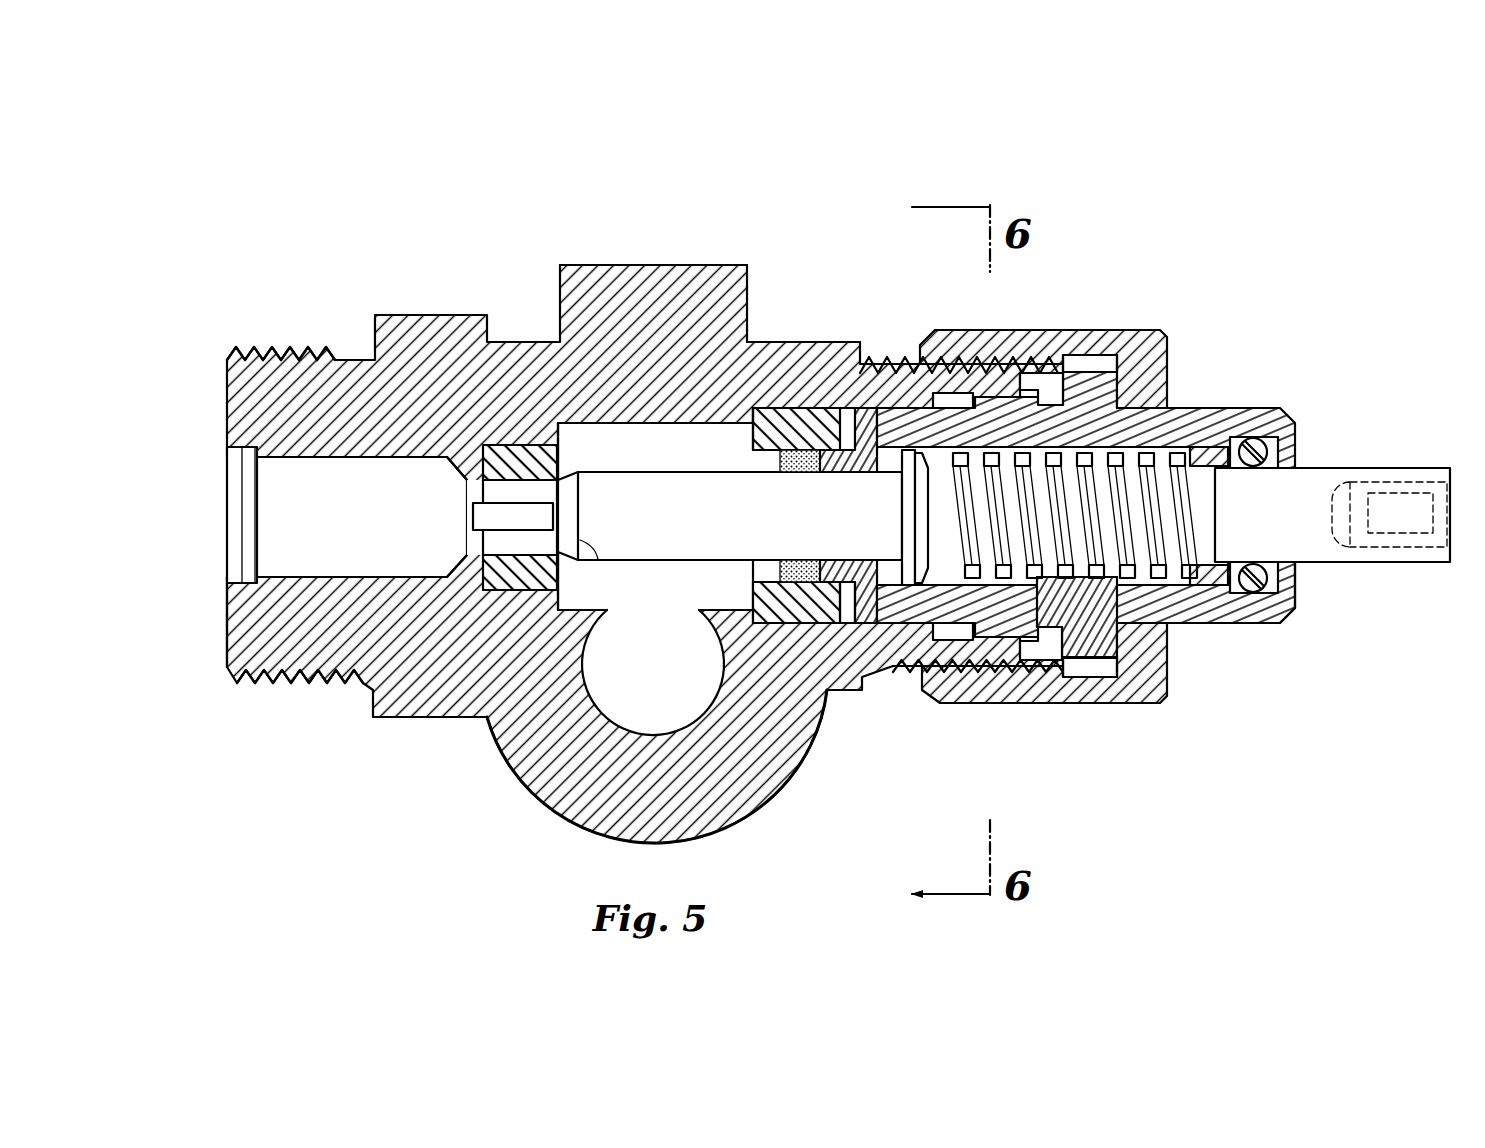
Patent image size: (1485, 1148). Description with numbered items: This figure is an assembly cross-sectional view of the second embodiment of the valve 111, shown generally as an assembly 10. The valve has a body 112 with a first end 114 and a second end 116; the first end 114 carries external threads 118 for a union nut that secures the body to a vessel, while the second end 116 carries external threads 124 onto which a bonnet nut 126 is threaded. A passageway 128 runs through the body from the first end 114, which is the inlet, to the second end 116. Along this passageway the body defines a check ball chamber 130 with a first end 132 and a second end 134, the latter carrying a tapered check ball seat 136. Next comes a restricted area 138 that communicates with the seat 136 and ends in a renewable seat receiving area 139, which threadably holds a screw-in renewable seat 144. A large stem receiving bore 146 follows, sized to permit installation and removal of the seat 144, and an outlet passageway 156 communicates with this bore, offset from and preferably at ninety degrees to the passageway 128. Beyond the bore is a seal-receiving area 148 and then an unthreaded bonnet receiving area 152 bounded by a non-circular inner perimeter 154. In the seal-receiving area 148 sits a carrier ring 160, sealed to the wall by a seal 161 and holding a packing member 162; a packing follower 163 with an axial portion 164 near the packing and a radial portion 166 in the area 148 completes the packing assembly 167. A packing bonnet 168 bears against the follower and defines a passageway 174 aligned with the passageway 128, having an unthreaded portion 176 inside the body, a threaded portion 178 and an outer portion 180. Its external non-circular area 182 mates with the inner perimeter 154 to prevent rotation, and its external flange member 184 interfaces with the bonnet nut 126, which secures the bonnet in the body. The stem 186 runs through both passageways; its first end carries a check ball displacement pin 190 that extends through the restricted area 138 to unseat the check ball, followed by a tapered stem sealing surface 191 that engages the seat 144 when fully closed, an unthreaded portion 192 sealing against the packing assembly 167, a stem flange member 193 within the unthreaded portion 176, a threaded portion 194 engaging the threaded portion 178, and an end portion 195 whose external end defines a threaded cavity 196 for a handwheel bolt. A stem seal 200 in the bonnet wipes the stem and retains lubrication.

The valve assembly 10 is at (1100, 217).
The valve 111 is at (1162, 258).
The body 112 is at (532, 343).
The first end 114 is at (225, 640).
The second end 116 is at (1020, 378).
The external threads 118 is at (262, 690).
The external threads 124 is at (940, 355).
The bonnet nut 126 is at (1175, 345).
The passageway 128 is at (622, 418).
The check ball chamber 130 is at (283, 512).
The first end 132 is at (228, 462).
The second end 134 is at (458, 477).
The check ball seat 136 is at (427, 462).
The restricted area 138 is at (480, 465).
The renewable seat receiving area 139 is at (508, 445).
The renewable seat 144 is at (565, 452).
The large stem receiving bore 146 is at (663, 420).
The seal-receiving area 148 is at (866, 440).
The unthreaded bonnet receiving area 152 is at (1000, 350).
The non-circular inner perimeter 154 is at (978, 666).
The outlet passageway 156 is at (622, 692).
The carrier ring 160 is at (790, 430).
The seal 161 is at (760, 432).
The packing member 162 is at (805, 470).
The packing follower 163 is at (848, 605).
The axial portion 164 is at (778, 573).
The radial portion 166 is at (870, 603).
The packing assembly 167 is at (805, 627).
The packing bonnet 168 is at (1183, 627).
The passageway 174 is at (1038, 600).
The unthreaded portion 176 is at (948, 572).
The threaded portion 178 is at (1095, 578).
The outer portion 180 is at (1272, 606).
The external non-circular area 182 is at (1000, 600).
The external flange member 184 is at (1110, 655).
The stem 186 is at (633, 516).
The check ball displacement pin 190 is at (478, 515).
The tapered stem sealing surface 191 is at (592, 552).
The unthreaded portion 192 is at (668, 565).
The stem flange member 193 is at (902, 520).
The threaded portion 194 is at (1195, 620).
The end portion 195 is at (1330, 540).
The threaded cavity 196 is at (1390, 510).
The stem seal 200 is at (1262, 440).